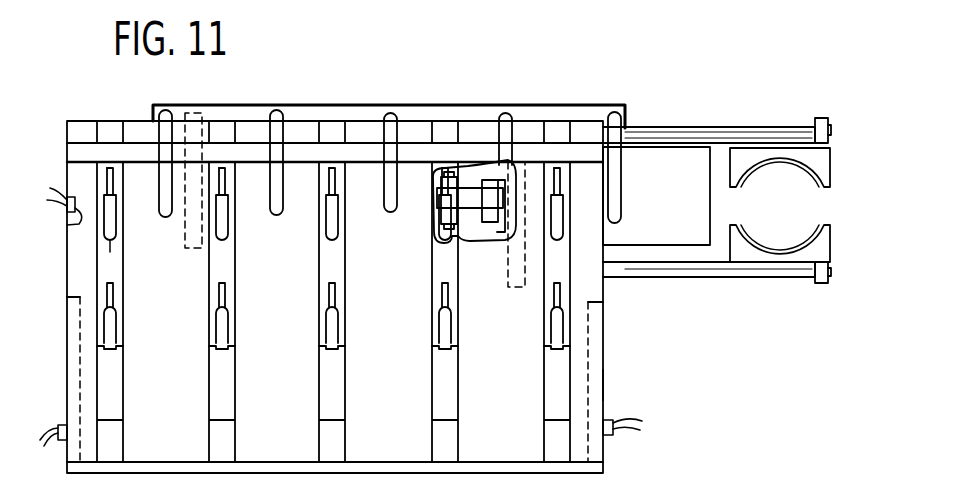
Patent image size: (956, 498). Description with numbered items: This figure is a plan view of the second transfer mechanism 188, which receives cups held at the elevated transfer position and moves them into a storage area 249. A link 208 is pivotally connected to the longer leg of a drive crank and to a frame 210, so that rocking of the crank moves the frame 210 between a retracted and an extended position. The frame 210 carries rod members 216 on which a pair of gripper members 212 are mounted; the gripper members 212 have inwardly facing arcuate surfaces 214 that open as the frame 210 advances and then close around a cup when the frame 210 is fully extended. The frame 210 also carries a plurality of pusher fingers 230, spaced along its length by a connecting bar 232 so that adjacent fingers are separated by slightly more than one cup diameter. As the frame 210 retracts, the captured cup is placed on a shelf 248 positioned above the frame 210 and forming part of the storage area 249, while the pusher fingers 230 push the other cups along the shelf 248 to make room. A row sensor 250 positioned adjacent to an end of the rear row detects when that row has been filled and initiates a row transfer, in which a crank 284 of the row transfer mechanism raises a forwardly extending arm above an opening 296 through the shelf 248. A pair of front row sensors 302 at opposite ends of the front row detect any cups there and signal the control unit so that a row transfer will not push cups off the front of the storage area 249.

The transfer mechanism 188 is at (716, 122).
The link 208 is at (470, 198).
The frame 210 is at (504, 182).
The gripper members 212 is at (823, 173).
The arcuate surfaces 214 is at (810, 174).
The rod members 216 is at (785, 132).
The pusher fingers 230 is at (398, 140).
The connecting bar 232 is at (291, 118).
The shelf 248 is at (648, 192).
The storage area 249 is at (628, 388).
The row sensor 250 is at (80, 220).
The crank 284 is at (103, 227).
The opening 296 is at (110, 243).
The front row sensors 302 is at (62, 421).